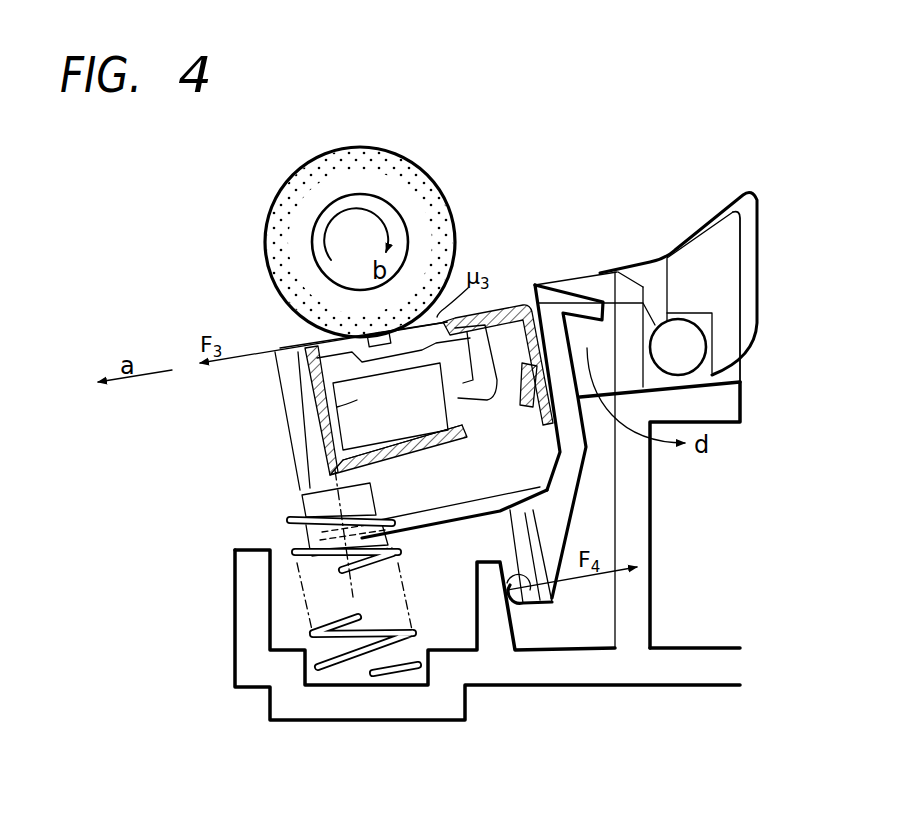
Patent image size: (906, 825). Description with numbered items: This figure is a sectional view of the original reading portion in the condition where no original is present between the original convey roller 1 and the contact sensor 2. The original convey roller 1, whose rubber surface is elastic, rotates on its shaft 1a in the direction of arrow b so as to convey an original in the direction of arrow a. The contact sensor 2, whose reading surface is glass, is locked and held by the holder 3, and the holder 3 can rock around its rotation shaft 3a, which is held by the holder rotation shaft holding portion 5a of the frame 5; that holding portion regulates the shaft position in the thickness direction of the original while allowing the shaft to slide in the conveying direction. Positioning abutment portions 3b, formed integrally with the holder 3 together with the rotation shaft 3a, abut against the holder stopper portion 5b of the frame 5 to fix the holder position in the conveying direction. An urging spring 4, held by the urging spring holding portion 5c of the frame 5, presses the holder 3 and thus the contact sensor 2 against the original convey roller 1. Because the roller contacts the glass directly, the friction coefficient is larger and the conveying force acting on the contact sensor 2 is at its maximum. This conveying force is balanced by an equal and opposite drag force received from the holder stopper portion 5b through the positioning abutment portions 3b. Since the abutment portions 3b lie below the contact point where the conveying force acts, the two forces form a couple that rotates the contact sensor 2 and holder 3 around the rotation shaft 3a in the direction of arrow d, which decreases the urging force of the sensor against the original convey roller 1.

The original convey roller 1 is at (393, 173).
The shaft of the original convey roller 1a is at (402, 217).
The contact sensor 2 is at (355, 403).
The holder 3 is at (568, 475).
The rotation shaft 3a is at (695, 362).
The positioning abutment portions 3b is at (520, 598).
The urging spring 4 is at (313, 587).
The frame 5 is at (645, 615).
The holder rotation shaft holding portion 5a is at (716, 282).
The holder stopper portion 5b is at (485, 608).
The urging spring holding portion 5c is at (332, 707).